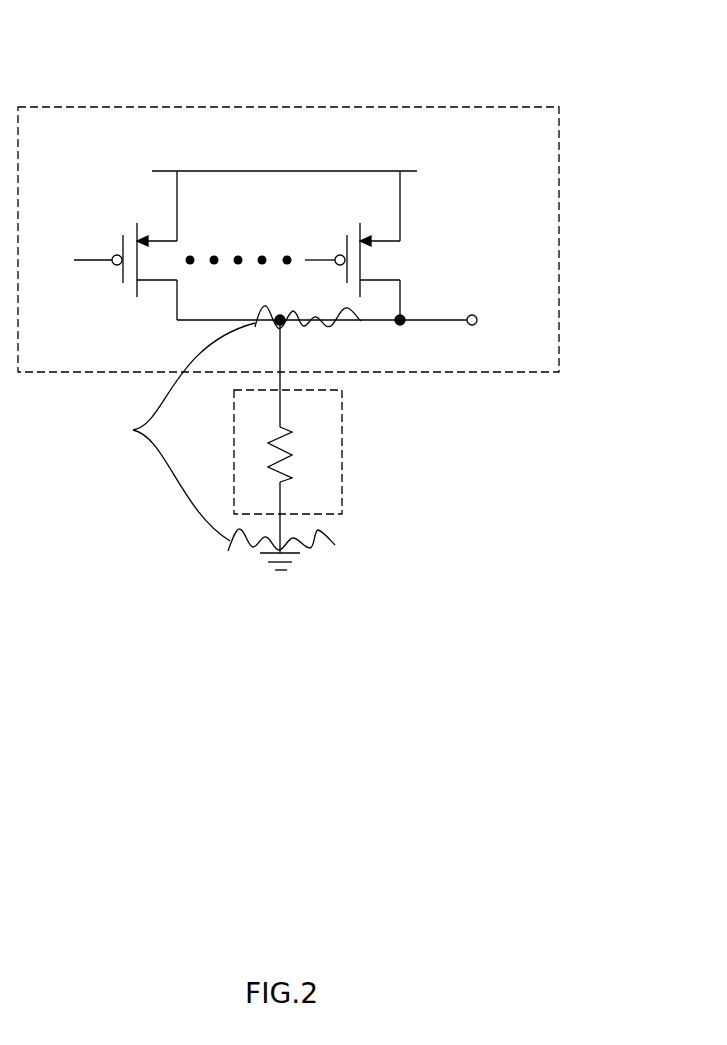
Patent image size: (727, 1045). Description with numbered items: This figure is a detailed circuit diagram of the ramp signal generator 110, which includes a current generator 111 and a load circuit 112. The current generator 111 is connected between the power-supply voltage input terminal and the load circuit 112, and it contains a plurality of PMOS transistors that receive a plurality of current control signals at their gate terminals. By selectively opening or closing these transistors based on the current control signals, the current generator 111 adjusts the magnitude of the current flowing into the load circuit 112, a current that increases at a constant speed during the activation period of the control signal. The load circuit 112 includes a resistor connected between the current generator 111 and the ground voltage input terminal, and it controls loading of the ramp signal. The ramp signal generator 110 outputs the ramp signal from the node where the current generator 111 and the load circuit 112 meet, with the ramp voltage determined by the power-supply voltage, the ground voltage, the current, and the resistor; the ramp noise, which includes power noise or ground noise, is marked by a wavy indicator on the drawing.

The ramp signal generator 110 is at (543, 54).
The current generator 111 is at (559, 238).
The load circuit 112 is at (342, 452).